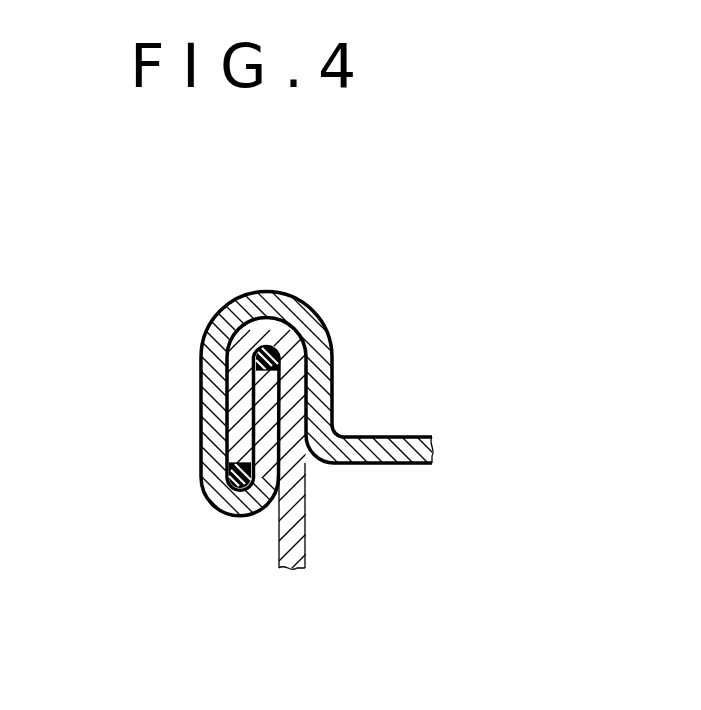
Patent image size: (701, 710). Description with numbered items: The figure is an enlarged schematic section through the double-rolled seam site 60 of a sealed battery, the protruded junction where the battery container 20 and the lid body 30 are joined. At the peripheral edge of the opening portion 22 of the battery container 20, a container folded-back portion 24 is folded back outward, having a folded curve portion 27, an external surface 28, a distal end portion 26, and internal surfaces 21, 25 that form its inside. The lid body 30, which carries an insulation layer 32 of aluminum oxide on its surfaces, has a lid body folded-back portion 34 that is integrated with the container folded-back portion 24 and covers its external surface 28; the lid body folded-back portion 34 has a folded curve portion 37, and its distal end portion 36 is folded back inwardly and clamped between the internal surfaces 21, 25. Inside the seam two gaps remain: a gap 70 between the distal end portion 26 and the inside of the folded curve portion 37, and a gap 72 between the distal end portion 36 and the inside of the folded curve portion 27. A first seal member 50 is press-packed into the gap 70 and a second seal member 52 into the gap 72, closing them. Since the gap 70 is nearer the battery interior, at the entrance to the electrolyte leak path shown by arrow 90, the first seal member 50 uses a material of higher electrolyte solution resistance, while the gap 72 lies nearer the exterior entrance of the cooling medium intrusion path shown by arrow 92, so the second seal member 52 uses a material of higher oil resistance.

The battery container 20 is at (297, 550).
The internal surface of container folded-back portion 21 is at (285, 405).
The opening portion 22 is at (396, 478).
The container folded-back portion 24 is at (210, 345).
The internal surface of container folded-back portion 25 is at (250, 415).
The distal end portion of container folded-back portion 26 is at (215, 455).
The folded curve portion of container folded-back portion 27 is at (268, 328).
The external surface of container folded-back portion 28 is at (232, 395).
The lid body 30 is at (430, 436).
The insulation layer 32 is at (303, 298).
The lid body folded-back portion 34 is at (198, 441).
The distal end portion of lid body folded-back portion 36 is at (228, 362).
The folded curve portion of lid body folded-back portion 37 is at (222, 513).
The first seal member 50 is at (232, 486).
The second seal member 52 is at (275, 352).
The double-rolled seam site 60 is at (218, 292).
The gap 70 is at (245, 514).
The gap 72 is at (247, 345).
The arrow 90 is at (312, 455).
The arrow 92 is at (272, 505).